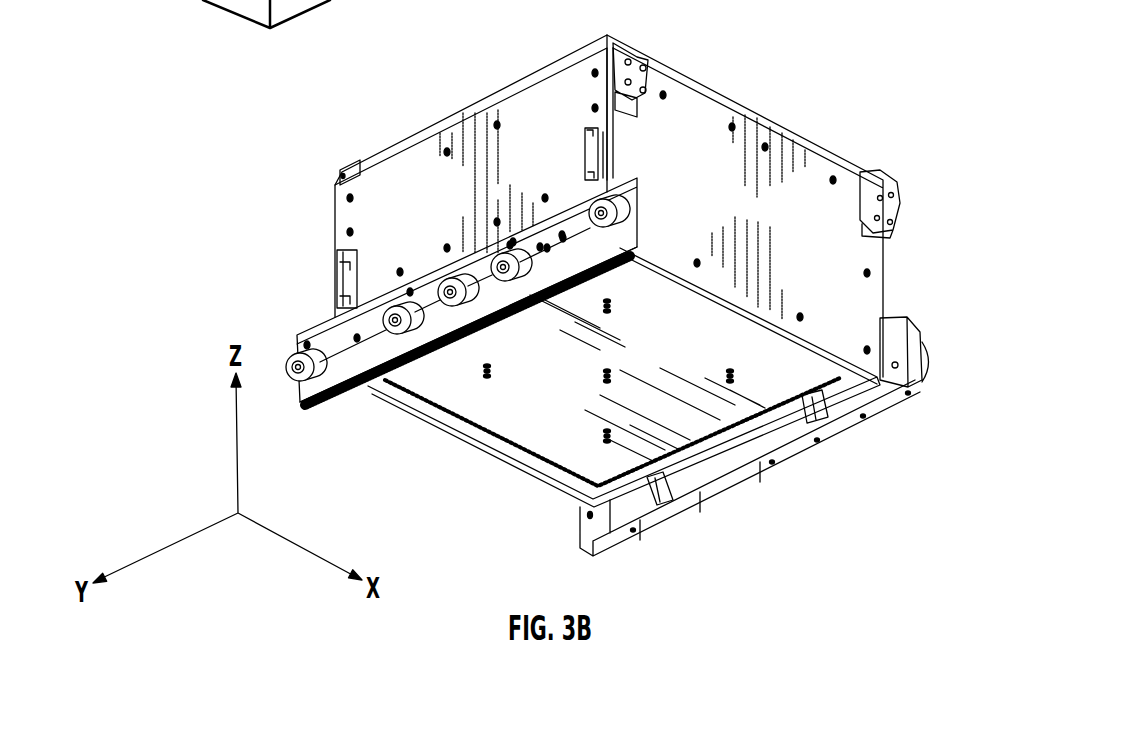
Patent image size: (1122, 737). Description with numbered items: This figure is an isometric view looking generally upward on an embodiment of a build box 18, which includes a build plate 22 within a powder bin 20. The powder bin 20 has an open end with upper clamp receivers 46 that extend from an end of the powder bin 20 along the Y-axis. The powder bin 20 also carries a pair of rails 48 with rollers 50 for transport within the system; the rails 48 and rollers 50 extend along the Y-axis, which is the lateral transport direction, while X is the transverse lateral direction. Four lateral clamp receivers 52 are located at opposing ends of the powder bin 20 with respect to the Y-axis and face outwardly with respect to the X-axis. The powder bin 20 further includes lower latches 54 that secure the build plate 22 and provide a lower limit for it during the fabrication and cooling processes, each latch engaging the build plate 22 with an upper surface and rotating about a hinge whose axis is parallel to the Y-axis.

The build box 18 is at (872, 104).
The powder bin 20 is at (730, 190).
The build plate 22 is at (787, 366).
The upper clamp receivers 46 is at (897, 190).
The rails 48 is at (907, 366).
The rollers 50 is at (290, 360).
The lateral clamp receivers 52 is at (593, 147).
The lower latches 54 is at (812, 405).